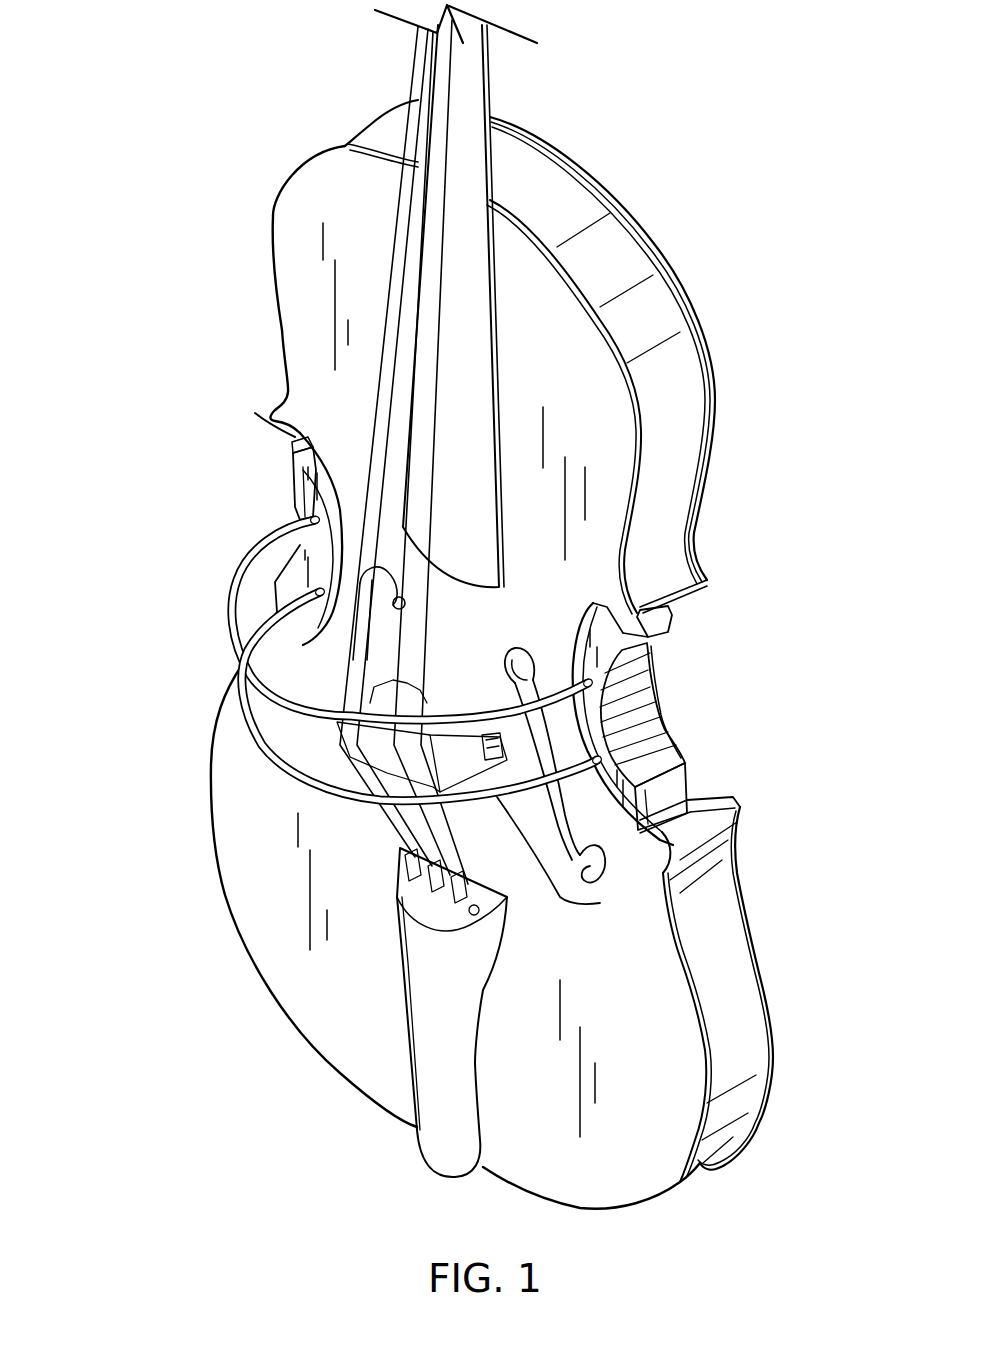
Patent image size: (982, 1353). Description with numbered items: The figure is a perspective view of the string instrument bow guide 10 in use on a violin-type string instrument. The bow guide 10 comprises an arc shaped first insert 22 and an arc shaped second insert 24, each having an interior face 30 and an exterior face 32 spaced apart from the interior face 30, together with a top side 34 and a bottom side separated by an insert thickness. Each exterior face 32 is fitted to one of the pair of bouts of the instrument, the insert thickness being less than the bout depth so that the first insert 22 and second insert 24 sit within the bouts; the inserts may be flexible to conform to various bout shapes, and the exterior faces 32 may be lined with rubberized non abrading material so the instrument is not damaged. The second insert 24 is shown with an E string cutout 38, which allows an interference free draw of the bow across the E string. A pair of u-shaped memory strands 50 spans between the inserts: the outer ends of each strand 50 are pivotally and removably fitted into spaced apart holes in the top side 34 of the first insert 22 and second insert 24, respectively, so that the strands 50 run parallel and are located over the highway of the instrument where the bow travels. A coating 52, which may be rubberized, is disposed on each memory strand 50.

The string instrument bow guide 10 is at (459, 651).
The first insert 22 is at (293, 427).
The second insert 24 is at (668, 624).
The interior face 30 is at (293, 505).
The exterior face 32 is at (580, 630).
The top side 34 is at (293, 466).
The E string cutout 38 is at (660, 727).
The memory strand 50 is at (243, 611).
The coating 52 is at (247, 640).